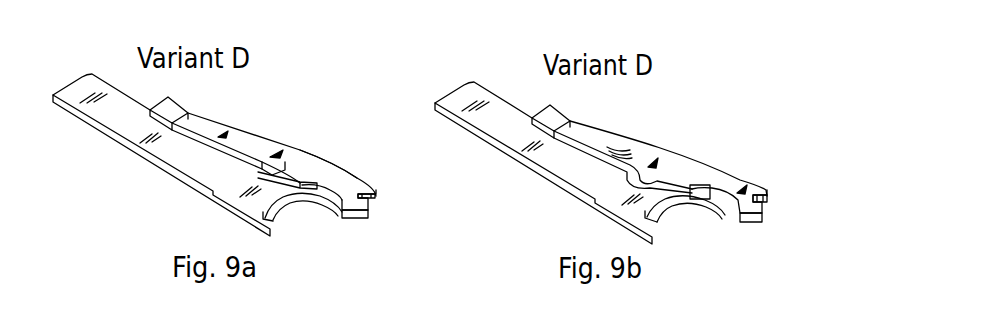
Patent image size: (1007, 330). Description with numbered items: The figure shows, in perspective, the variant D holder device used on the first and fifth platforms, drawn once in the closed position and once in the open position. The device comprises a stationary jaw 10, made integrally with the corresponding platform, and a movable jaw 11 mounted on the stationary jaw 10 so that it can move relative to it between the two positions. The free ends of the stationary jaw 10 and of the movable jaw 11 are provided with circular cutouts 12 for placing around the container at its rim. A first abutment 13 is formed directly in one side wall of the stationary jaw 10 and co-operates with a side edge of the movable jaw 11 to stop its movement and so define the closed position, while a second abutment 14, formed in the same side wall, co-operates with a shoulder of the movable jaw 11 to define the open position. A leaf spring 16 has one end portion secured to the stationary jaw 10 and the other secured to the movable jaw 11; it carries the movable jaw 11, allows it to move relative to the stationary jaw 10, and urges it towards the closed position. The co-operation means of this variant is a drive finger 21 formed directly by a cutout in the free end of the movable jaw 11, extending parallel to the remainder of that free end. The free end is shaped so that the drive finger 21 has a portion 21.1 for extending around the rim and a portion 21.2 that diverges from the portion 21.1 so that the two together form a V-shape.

In FIG. 9A, the stationary jaw 10 is at (152, 150).
In FIG. 9B, the stationary jaw 10 is at (497, 137).
In FIG. 9A, the movable jaw 11 is at (317, 172).
In FIG. 9B, the movable jaw 11 is at (742, 182).
In FIG. 9A, the circular cutouts 12 is at (352, 178).
In FIG. 9A, the first abutment 13 is at (270, 158).
In FIG. 9A, the second abutment 14 is at (266, 182).
In FIG. 9A, the leaf spring 16 is at (233, 133).
In FIG. 9A, the drive finger 21 is at (398, 244).
In FIG. 9B, the drive finger 21 is at (769, 243).
In FIG. 9A, the portion for extending around the rim 21.1 is at (368, 208).
In FIG. 9B, the portion for extending around the rim 21.1 is at (763, 210).
In FIG. 9A, the diverging portion 21.2 is at (368, 203).
In FIG. 9B, the diverging portion 21.2 is at (762, 205).